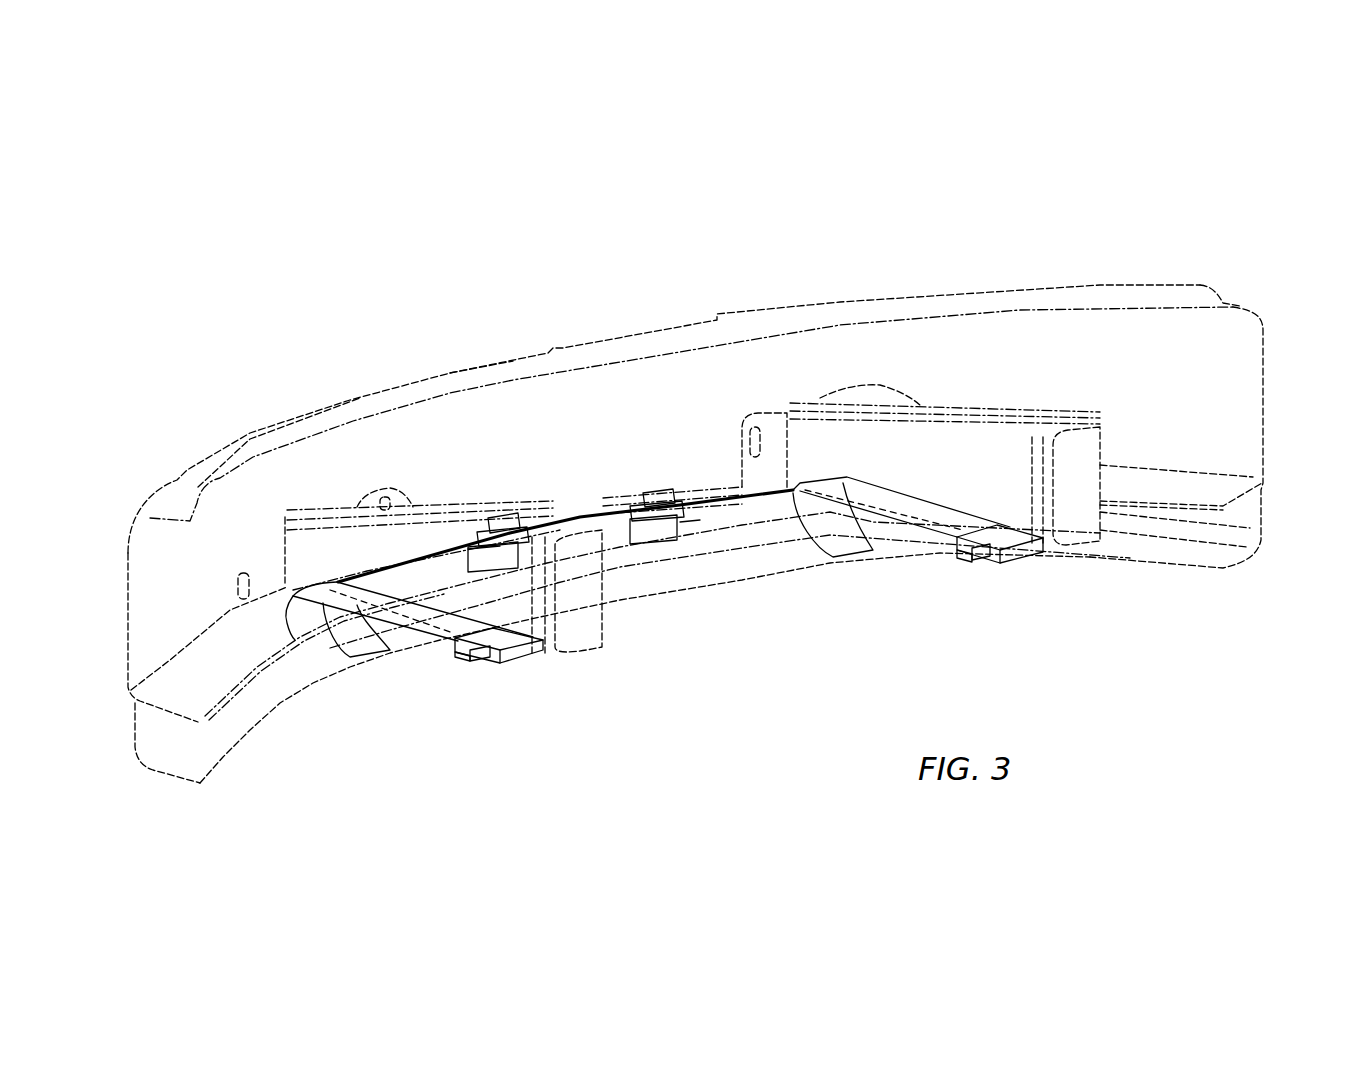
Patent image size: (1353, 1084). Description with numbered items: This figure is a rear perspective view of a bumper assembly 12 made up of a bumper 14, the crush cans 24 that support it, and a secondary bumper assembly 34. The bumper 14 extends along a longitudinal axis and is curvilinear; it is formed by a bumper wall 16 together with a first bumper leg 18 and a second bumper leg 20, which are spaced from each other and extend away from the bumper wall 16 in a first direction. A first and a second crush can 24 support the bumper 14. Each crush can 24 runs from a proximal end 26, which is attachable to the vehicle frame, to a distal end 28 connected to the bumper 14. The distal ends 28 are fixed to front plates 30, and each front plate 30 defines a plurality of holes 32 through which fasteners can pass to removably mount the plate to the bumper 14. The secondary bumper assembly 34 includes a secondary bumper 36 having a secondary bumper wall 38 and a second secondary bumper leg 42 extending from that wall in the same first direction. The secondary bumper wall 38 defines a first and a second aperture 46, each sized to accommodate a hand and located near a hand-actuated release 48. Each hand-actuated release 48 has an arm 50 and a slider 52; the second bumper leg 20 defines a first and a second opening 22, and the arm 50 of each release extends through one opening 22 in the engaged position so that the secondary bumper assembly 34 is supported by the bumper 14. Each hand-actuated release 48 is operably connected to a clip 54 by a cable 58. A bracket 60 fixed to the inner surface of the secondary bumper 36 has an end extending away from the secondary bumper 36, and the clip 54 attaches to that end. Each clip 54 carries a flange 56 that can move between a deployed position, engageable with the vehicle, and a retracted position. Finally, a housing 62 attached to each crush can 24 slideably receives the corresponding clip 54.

The bumper assembly 12 is at (1140, 245).
The bumper 14 is at (1275, 383).
The bumper wall 16 is at (485, 424).
The first bumper leg 18 is at (182, 490).
The second bumper leg 20 is at (185, 672).
The opening 22 is at (548, 527).
The crush can 24 is at (432, 502).
The proximal end 26 is at (600, 635).
The distal end 28 is at (280, 548).
The front plate 30 is at (367, 485).
The holes 32 is at (383, 505).
The secondary bumper assembly 34 is at (1302, 428).
The secondary bumper 36 is at (1270, 518).
The secondary bumper wall 38 is at (148, 723).
The second secondary bumper leg 42 is at (234, 715).
The aperture 46 is at (470, 555).
The hand-actuated release 48 is at (511, 517).
The arm 50 is at (497, 533).
The slider 52 is at (493, 548).
The clip 54 is at (538, 650).
The flange 56 is at (480, 661).
The cable 58 is at (367, 570).
The bracket 60 is at (326, 660).
The housing 62 is at (464, 654).